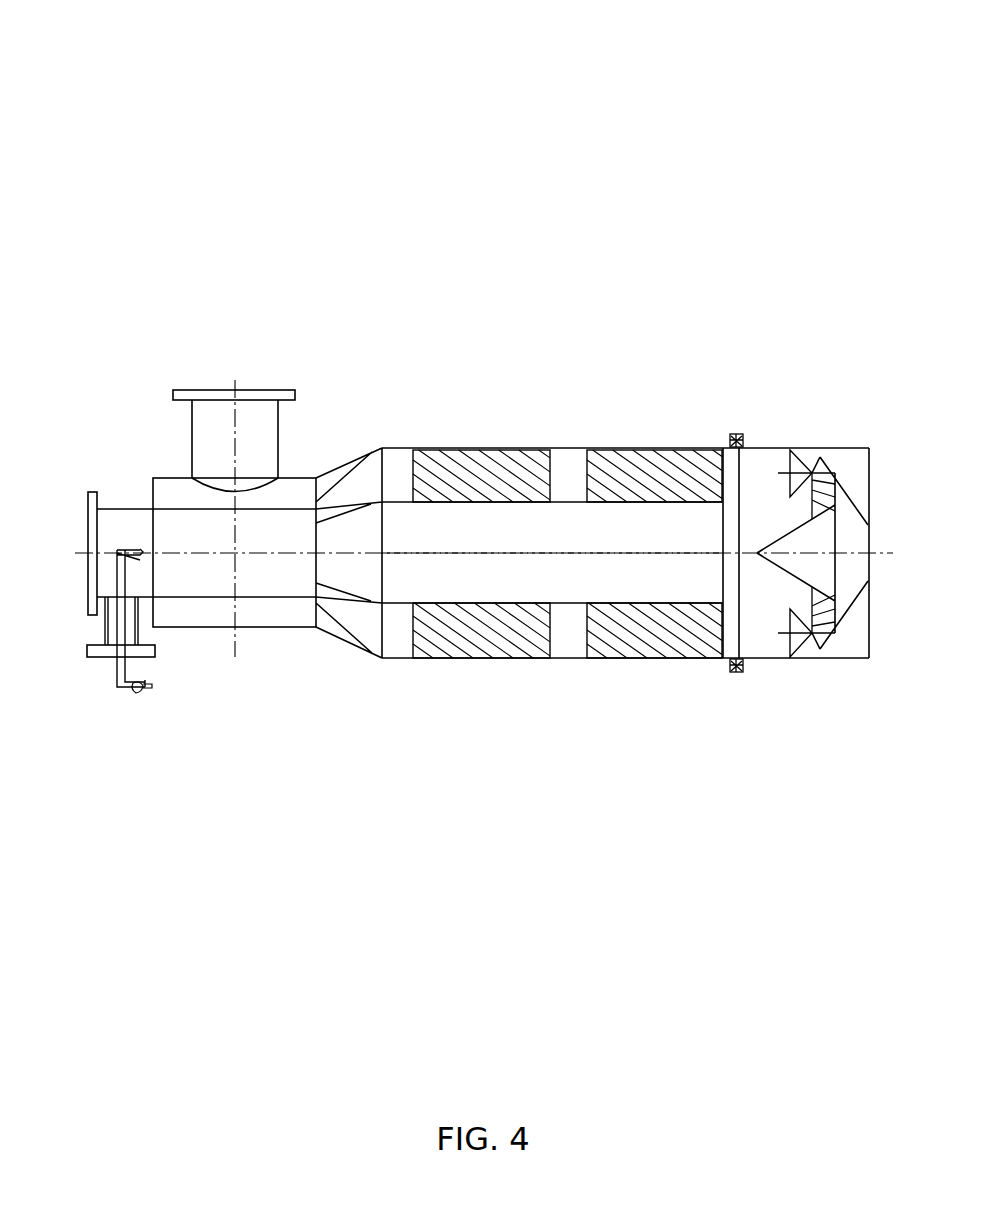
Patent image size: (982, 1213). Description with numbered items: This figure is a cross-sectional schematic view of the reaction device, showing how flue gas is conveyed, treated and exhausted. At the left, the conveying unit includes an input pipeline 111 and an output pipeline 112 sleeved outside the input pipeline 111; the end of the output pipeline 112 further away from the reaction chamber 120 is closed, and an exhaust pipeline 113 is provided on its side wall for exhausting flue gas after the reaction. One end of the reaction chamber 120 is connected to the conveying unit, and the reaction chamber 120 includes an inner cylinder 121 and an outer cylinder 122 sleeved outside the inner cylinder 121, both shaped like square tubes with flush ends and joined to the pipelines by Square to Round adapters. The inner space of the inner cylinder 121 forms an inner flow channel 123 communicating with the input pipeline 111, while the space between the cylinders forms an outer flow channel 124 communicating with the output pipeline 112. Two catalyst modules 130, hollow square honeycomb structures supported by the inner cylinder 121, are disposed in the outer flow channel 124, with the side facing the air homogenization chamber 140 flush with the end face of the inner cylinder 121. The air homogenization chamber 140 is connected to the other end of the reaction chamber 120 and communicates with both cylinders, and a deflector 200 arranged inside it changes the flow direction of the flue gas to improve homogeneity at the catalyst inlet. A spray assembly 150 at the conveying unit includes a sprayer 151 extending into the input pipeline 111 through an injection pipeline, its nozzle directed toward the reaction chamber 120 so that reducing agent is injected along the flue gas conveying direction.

The input pipeline 111 is at (118, 522).
The output pipeline 112 is at (173, 497).
The exhaust pipeline 113 is at (257, 425).
The reaction chamber 120 is at (562, 413).
The inner cylinder 121 is at (567, 607).
The outer cylinder 122 is at (393, 658).
The inner flow channel 123 is at (482, 575).
The outer flow channel 124 is at (573, 642).
The catalyst module 130 is at (470, 478).
The air homogenization chamber 140 is at (770, 658).
The spray assembly 150 is at (116, 694).
The sprayer 151 is at (123, 562).
The deflector 200 is at (843, 636).